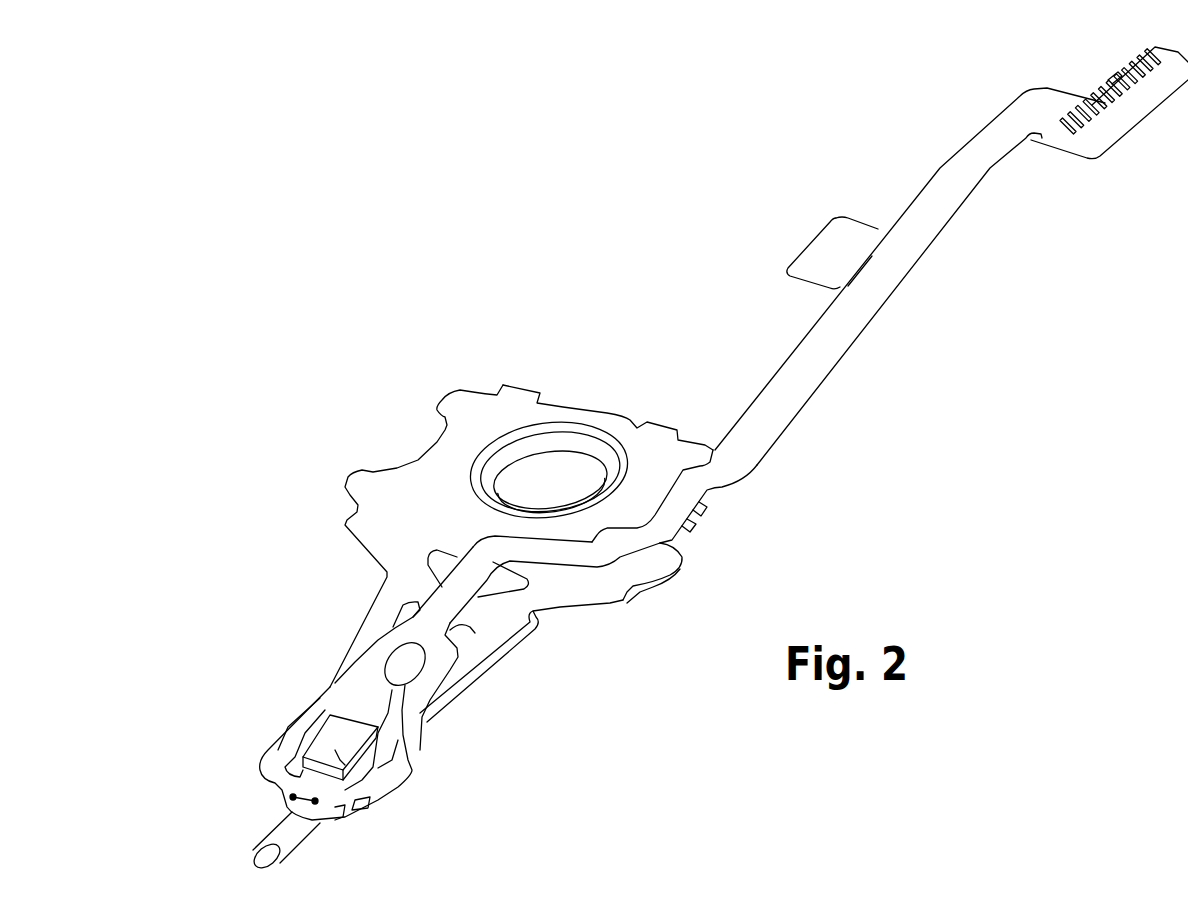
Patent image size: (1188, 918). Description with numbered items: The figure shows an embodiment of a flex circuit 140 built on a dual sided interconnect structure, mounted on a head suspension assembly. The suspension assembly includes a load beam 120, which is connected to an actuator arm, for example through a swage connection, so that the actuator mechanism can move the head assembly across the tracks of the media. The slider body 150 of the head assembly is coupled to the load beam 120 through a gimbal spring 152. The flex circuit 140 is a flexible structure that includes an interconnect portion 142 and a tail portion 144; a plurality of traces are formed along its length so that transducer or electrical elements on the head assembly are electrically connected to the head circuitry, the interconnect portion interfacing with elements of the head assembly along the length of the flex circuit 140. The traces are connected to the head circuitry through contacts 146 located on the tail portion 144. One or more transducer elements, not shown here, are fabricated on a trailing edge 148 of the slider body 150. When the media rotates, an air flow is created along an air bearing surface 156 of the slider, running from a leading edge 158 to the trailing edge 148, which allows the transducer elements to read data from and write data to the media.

The load beam 120 is at (441, 520).
The flex circuit 140 is at (710, 404).
The interconnect portion 142 is at (272, 785).
The tail portion 144 is at (767, 422).
The contacts 146 is at (1110, 80).
The trailing edge 148 is at (340, 800).
The slider body 150 is at (337, 738).
The gimbal spring 152 is at (480, 632).
The air bearing surface 156 is at (333, 768).
The leading edge 158 is at (380, 737).